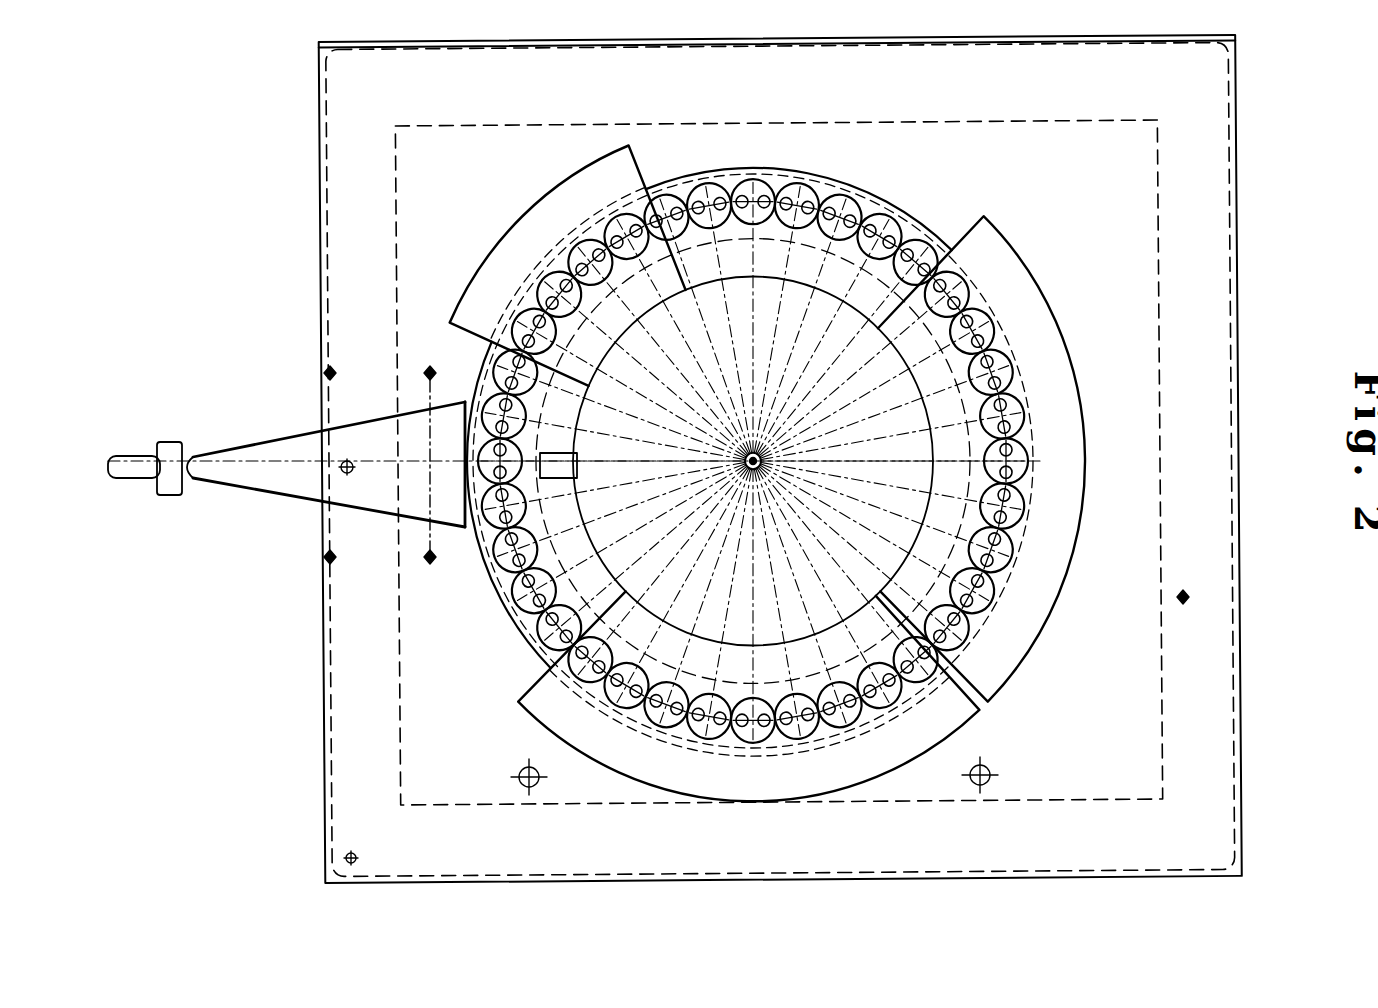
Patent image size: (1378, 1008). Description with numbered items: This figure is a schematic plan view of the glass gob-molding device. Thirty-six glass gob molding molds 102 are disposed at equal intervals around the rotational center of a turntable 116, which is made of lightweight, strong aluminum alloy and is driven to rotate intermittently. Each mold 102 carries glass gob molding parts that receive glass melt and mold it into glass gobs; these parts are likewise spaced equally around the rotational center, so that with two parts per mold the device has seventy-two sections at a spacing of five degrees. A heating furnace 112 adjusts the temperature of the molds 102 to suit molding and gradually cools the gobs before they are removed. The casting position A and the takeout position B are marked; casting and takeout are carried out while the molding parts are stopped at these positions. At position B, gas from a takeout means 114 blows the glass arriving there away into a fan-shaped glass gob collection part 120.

The glass gob molding mold 102 is at (515, 611).
The heating furnace 112 is at (498, 252).
The takeout means 114 is at (586, 432).
The turntable 116 is at (908, 222).
The fan-shaped glass gob collection part 120 is at (374, 432).
The casting position A is at (767, 175).
The takeout position B is at (475, 530).